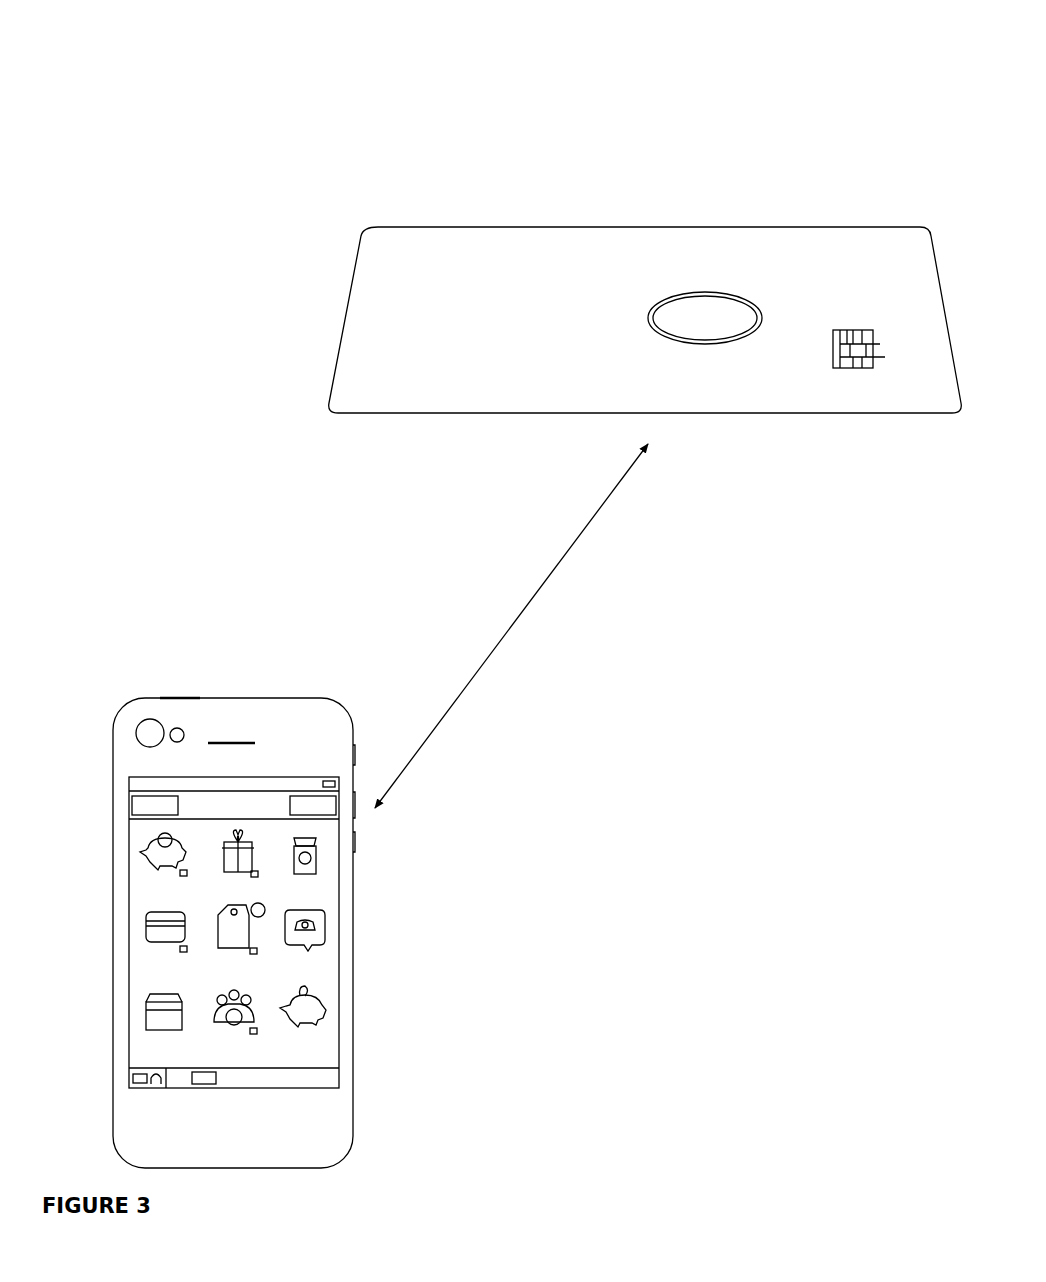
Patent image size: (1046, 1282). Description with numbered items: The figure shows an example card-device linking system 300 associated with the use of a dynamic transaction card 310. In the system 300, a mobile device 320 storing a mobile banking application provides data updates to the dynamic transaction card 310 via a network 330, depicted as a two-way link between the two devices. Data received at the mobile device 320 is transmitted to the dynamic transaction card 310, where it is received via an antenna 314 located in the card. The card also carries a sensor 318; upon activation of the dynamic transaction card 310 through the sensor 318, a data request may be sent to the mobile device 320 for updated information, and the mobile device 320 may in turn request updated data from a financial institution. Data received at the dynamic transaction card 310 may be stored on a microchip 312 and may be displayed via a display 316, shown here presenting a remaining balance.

The system 300 is at (185, 61).
The dynamic transaction card 310 is at (432, 222).
The microchip 312 is at (860, 369).
The antenna 314 is at (412, 390).
The display 316 is at (428, 341).
The sensor 318 is at (722, 294).
The mobile device 320 is at (377, 920).
The network 330 is at (485, 663).